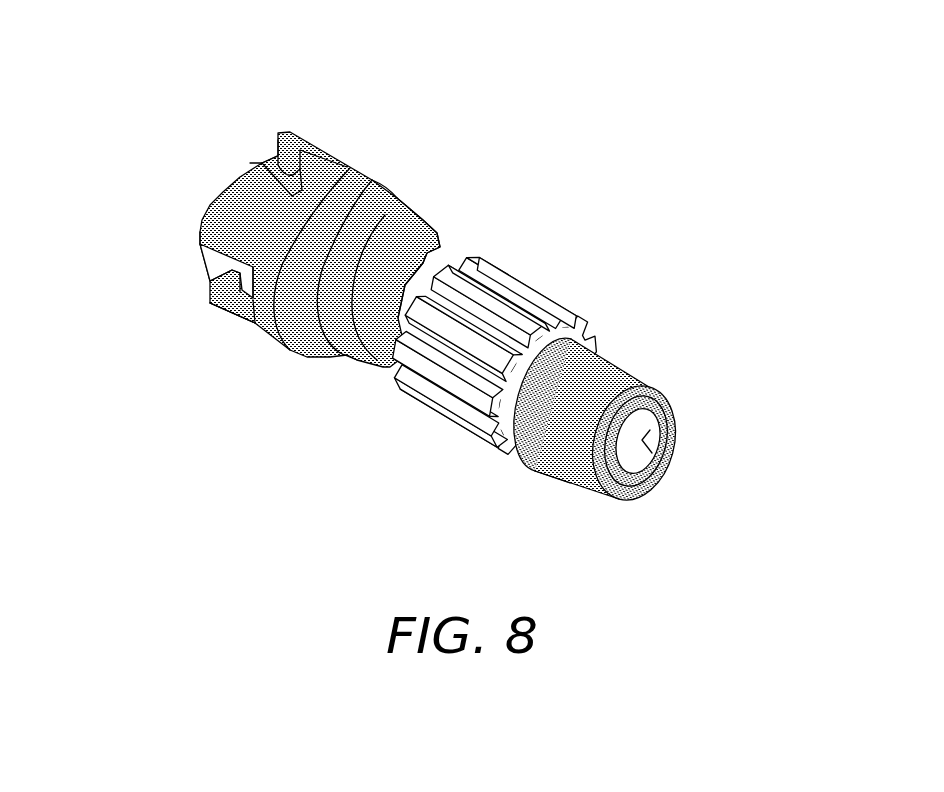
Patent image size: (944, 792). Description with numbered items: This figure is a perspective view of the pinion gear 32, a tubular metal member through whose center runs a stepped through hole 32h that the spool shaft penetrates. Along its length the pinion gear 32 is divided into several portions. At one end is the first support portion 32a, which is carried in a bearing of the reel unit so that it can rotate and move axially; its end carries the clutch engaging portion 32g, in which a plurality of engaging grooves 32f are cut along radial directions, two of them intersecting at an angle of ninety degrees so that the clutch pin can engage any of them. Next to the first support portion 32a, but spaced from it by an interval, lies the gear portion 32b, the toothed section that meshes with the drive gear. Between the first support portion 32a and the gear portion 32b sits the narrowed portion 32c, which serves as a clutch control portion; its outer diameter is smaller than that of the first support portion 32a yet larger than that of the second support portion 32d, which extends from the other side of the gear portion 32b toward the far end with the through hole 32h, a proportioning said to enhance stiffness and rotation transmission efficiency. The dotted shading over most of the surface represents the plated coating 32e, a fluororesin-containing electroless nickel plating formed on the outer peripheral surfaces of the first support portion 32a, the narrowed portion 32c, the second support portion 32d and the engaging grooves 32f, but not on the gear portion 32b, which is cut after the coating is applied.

The pinion gear 32 is at (416, 225).
The first support portion 32a is at (334, 192).
The gear portion 32b is at (534, 314).
The narrowed portion 32c is at (416, 228).
The second support portion 32d is at (605, 376).
The plated coating 32e is at (346, 430).
The engaging grooves 32f is at (209, 193).
The clutch engaging portion 32g is at (155, 265).
The through hole 32h is at (700, 441).